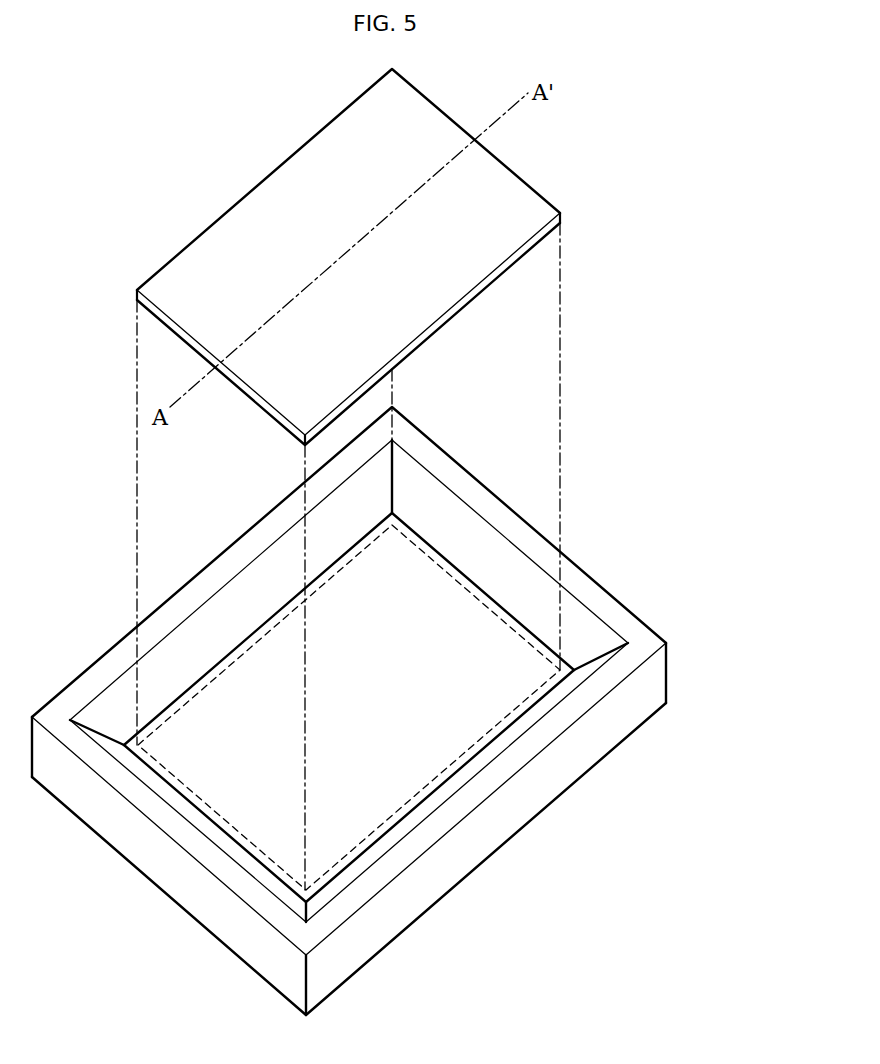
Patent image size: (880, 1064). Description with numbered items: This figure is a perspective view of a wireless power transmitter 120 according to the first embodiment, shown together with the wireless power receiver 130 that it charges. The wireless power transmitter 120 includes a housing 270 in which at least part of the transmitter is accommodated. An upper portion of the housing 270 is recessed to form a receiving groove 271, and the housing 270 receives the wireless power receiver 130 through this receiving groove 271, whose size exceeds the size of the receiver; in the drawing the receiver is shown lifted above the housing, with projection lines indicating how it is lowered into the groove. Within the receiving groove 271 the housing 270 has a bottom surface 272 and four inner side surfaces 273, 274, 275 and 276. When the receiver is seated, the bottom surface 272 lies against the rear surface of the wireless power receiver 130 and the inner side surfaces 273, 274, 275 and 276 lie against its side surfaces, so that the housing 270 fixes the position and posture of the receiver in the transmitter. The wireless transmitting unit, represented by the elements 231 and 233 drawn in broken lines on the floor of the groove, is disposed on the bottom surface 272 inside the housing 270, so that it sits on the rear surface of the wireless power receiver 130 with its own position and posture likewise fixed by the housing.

The wireless power receiver 130 is at (277, 187).
The wireless power transmitter 120 is at (387, 711).
The housing 270 is at (658, 680).
The receiving groove 271 is at (506, 703).
The bottom surface 272 is at (370, 807).
The inner side surface 273 is at (492, 537).
The inner side surface 274 is at (230, 598).
The inner side surface 275 is at (200, 823).
The inner side surface 276 is at (550, 707).
The wireless transmitting unit element 231 is at (351, 727).
The wireless transmitting unit element 233 is at (452, 765).